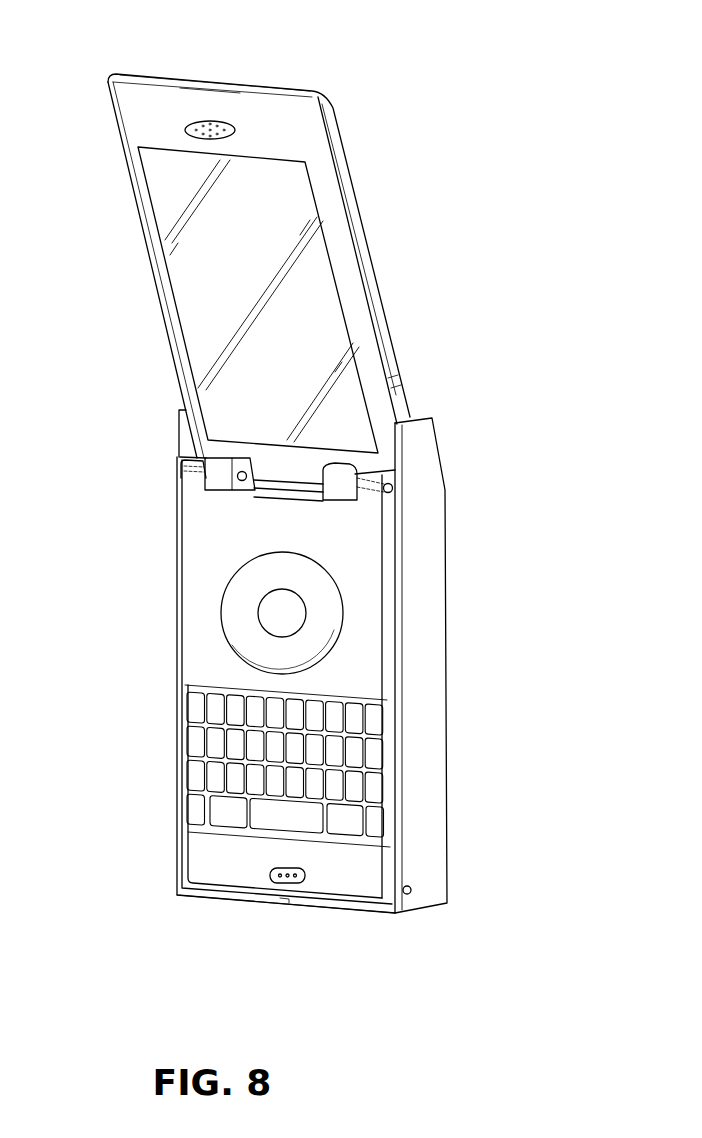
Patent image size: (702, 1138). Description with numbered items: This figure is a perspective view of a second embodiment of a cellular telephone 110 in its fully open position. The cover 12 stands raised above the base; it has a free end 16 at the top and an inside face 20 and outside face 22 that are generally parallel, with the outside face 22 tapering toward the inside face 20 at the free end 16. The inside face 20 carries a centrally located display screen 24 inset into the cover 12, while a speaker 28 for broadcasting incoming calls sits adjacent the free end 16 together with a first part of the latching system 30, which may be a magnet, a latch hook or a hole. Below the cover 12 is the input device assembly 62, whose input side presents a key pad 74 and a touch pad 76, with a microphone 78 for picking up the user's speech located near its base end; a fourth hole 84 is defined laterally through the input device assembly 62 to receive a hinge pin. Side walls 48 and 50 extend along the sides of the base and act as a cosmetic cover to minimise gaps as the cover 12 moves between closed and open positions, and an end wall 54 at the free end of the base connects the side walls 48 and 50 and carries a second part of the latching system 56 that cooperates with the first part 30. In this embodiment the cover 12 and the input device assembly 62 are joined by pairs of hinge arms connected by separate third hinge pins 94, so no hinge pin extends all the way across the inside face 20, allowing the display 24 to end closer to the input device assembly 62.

The cellular telephone 110 is at (500, 210).
The cover 12 is at (333, 146).
The free end 16 is at (277, 86).
The first part of the latching system 30 is at (205, 86).
The speaker 28 is at (185, 130).
The outside face 22 is at (366, 214).
The inside face 20 is at (345, 286).
The display screen 24 is at (185, 279).
The side wall 48 is at (177, 862).
The input device assembly 62 is at (183, 566).
The side wall 50 is at (410, 872).
The end wall 54 is at (195, 897).
The second part of the latching system 56 is at (284, 902).
The microphone 78 is at (271, 876).
The fourth hole 84 is at (410, 895).
The touch pad 76 is at (328, 578).
The key pad 74 is at (185, 748).
The third hinge pins 94 is at (243, 481).